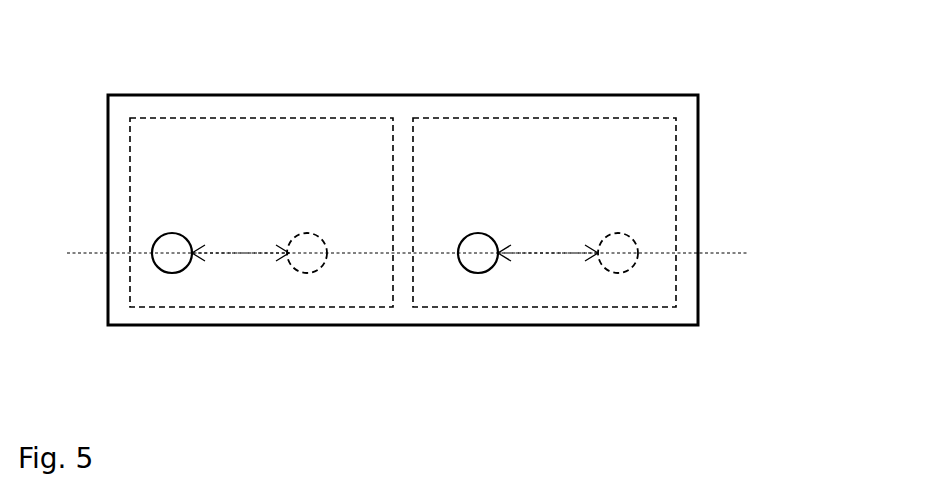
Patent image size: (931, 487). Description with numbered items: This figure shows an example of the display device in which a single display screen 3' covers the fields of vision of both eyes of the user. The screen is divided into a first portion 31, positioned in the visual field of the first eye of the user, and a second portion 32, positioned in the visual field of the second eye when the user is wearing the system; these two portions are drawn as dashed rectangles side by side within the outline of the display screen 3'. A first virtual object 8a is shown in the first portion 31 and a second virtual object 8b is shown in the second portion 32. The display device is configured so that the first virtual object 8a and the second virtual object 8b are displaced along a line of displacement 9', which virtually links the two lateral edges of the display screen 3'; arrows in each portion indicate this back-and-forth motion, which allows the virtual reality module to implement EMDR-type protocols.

The display screen 3' is at (425, 168).
The line of displacement 9' is at (424, 254).
The first portion of the display screen 31 is at (322, 292).
The second portion of the display screen 32 is at (613, 295).
The first virtual object 8a is at (172, 273).
The second virtual object 8b is at (475, 273).